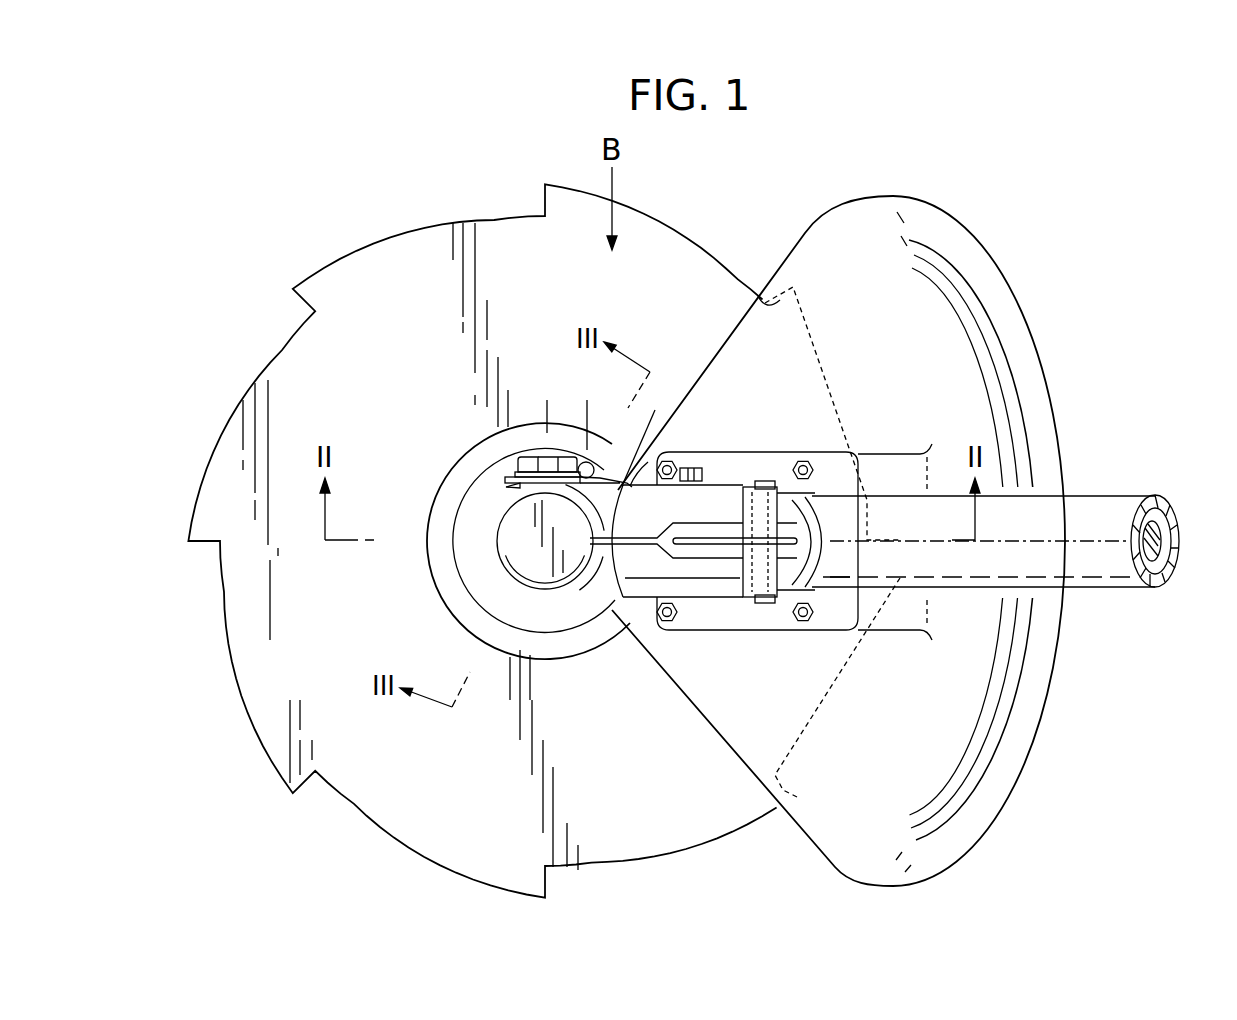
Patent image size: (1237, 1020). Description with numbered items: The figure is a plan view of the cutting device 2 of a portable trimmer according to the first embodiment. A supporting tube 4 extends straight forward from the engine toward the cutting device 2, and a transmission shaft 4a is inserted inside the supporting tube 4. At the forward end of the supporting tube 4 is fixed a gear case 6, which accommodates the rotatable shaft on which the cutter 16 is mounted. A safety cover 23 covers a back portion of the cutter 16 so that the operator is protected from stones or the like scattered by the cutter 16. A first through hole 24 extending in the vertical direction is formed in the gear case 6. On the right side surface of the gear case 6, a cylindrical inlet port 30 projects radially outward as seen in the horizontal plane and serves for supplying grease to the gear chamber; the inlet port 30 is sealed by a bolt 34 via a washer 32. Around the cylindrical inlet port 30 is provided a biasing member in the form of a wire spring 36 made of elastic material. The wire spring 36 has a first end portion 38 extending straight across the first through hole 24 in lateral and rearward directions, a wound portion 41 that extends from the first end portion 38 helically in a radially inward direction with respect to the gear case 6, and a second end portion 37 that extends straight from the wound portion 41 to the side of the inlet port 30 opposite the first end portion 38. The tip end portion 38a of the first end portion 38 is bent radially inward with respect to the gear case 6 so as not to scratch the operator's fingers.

The cutting device 2 is at (712, 222).
The supporting tube 4 is at (1095, 522).
The transmission shaft 4a is at (1163, 542).
The gear case 6 is at (565, 614).
The cutter 16 is at (455, 793).
The safety cover 23 is at (942, 730).
The first through hole 24 is at (580, 458).
The cylindrical inlet port 30 is at (515, 488).
The washer 32 is at (530, 475).
The bolt 34 is at (522, 462).
The wire spring 36 is at (536, 496).
The second end portion 37 is at (506, 484).
The first end portion 38 is at (620, 428).
The tip end portion 38a is at (627, 478).
The wound portion 41 is at (558, 457).